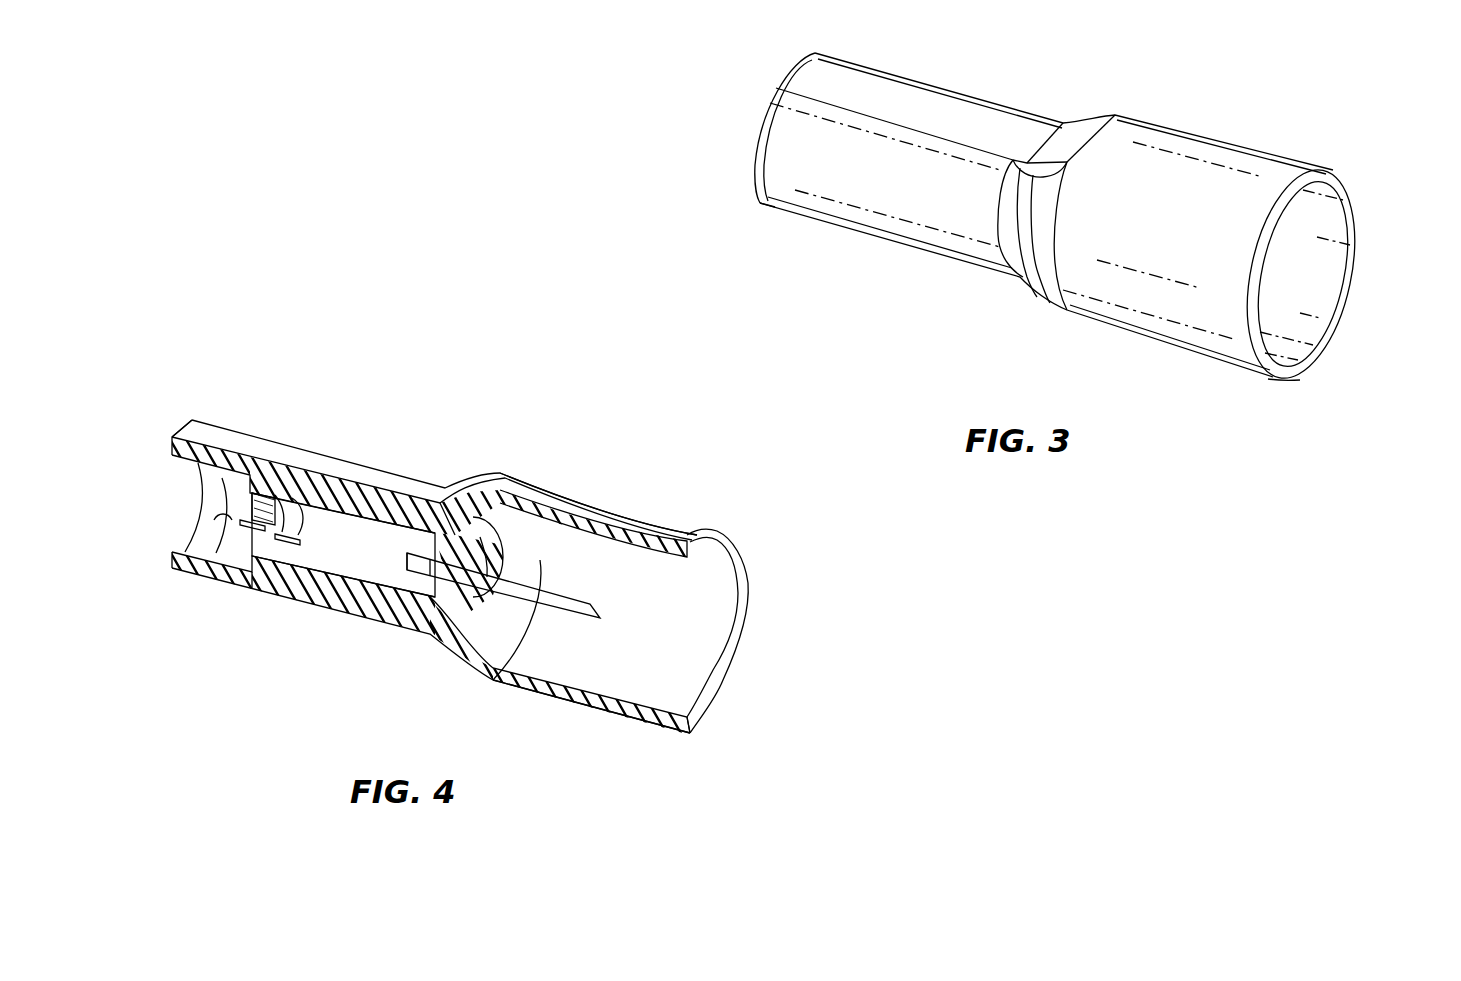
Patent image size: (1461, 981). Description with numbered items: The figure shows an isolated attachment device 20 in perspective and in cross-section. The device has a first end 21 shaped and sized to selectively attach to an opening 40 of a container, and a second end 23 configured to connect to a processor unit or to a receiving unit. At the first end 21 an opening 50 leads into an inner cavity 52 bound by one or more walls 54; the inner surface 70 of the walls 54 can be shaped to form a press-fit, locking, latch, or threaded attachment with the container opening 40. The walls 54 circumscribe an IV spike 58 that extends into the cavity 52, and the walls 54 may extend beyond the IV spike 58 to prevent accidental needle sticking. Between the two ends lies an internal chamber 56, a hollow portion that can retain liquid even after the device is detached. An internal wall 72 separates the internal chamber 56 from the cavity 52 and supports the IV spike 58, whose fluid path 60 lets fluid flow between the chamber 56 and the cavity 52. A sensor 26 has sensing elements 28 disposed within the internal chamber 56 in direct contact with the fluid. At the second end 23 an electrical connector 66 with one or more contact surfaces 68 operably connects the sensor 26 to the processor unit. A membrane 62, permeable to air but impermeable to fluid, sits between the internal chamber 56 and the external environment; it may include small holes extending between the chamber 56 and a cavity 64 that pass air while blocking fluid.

In FIG. 3, the attachment device 20 is at (1158, 133).
In FIG. 4, the attachment device 20 is at (405, 485).
In FIG. 3, the first end 21 is at (1269, 383).
In FIG. 4, the first end 21 is at (637, 517).
In FIG. 3, the second end 23 is at (760, 204).
In FIG. 4, the second end 23 is at (186, 414).
In FIG. 4, the sensor 26 is at (313, 590).
In FIG. 4, the sensing elements 28 is at (323, 510).
In FIG. 4, the opening 40 is at (673, 680).
In FIG. 3, the opening 50 is at (1308, 281).
In FIG. 4, the opening 50 is at (688, 638).
In FIG. 4, the inner cavity 52 is at (692, 597).
In FIG. 4, the walls 54 is at (670, 527).
In FIG. 4, the internal chamber 56 is at (380, 570).
In FIG. 4, the IV spike 58 is at (545, 584).
In FIG. 4, the fluid path 60 is at (567, 585).
In FIG. 4, the membrane 62 is at (256, 496).
In FIG. 4, the cavity 64 is at (206, 525).
In FIG. 4, the electrical connector 66 is at (243, 537).
In FIG. 4, the contact surfaces 68 is at (218, 528).
In FIG. 4, the inner surface 70 is at (694, 730).
In FIG. 4, the internal wall 72 is at (488, 598).